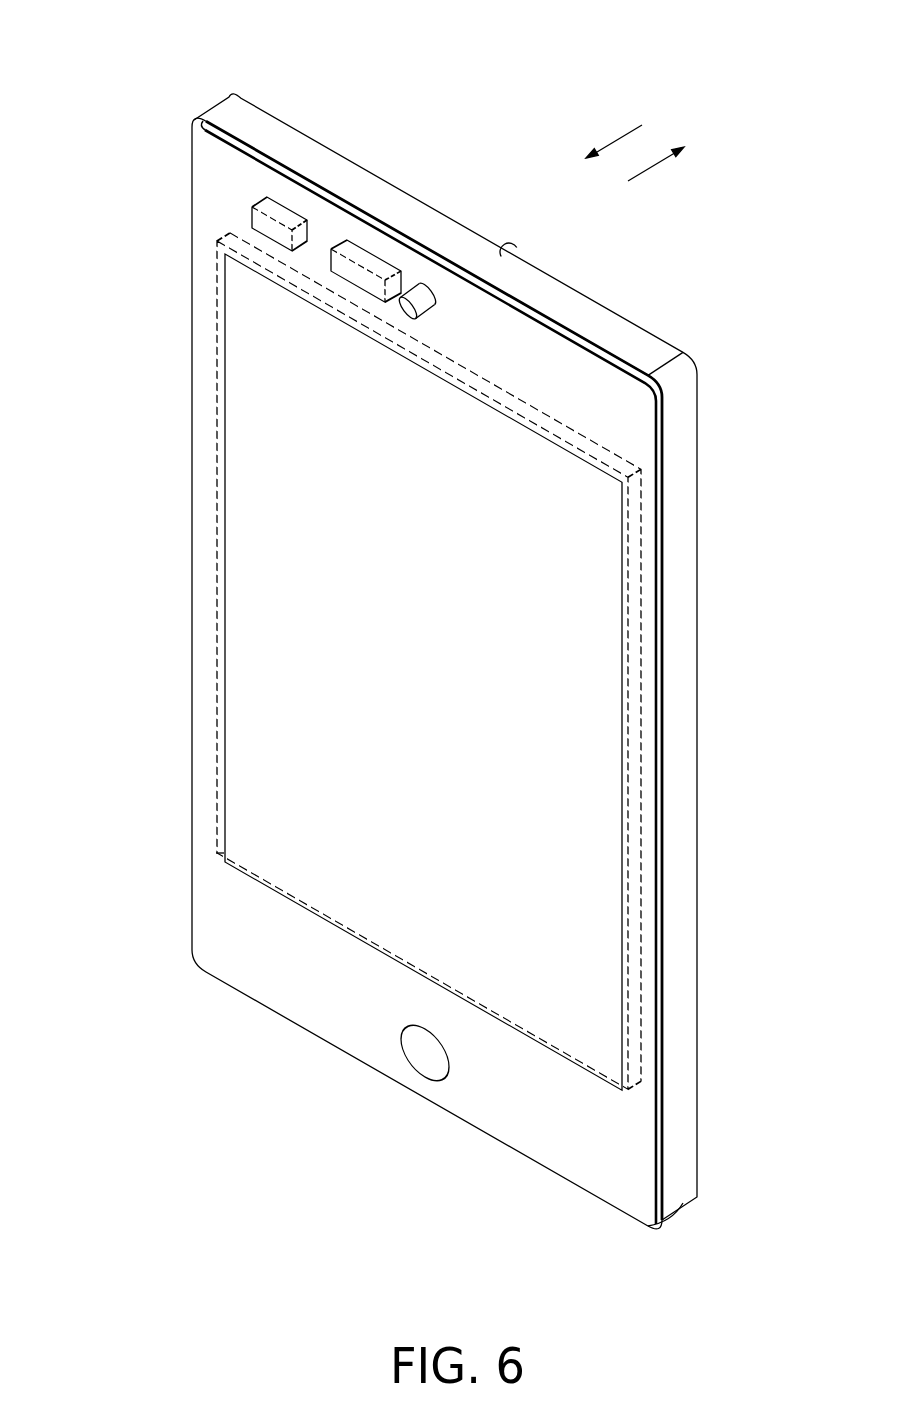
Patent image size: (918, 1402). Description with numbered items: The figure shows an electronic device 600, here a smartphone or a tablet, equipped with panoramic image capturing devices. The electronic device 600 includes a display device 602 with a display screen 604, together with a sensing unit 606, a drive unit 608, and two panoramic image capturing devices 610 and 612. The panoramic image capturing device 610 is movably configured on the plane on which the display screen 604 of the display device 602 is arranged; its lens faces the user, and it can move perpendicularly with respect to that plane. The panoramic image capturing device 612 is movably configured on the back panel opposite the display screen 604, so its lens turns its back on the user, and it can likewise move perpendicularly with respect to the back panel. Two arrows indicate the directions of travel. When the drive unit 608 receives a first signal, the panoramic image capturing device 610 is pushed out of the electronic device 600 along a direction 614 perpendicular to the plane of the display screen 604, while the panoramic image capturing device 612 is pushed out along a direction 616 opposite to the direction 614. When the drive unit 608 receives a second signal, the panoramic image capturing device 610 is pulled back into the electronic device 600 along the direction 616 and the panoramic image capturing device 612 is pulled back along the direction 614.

The electronic device 600 is at (66, 34).
The display device 602 is at (215, 492).
The display screen 604 is at (224, 554).
The sensing unit 606 is at (287, 212).
The drive unit 608 is at (383, 262).
The panoramic image capturing device 610 is at (418, 296).
The panoramic image capturing device 612 is at (521, 243).
The direction 614 is at (604, 136).
The direction 616 is at (664, 171).